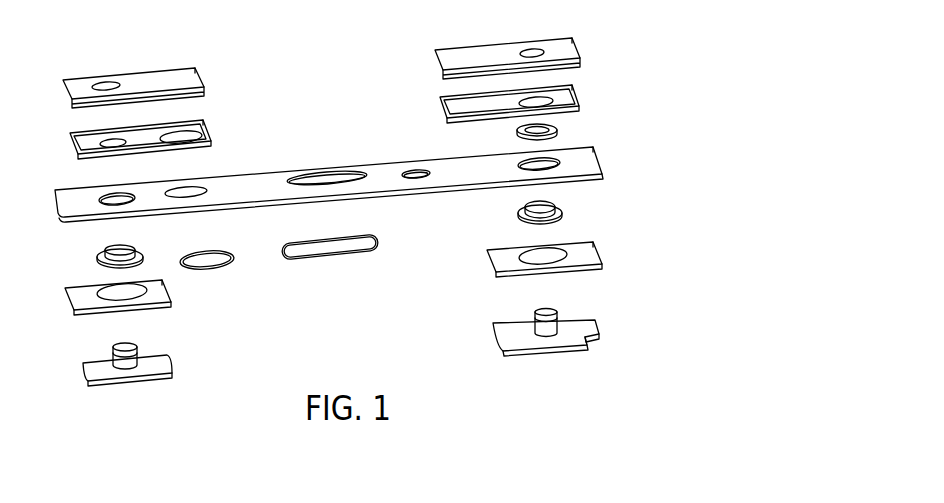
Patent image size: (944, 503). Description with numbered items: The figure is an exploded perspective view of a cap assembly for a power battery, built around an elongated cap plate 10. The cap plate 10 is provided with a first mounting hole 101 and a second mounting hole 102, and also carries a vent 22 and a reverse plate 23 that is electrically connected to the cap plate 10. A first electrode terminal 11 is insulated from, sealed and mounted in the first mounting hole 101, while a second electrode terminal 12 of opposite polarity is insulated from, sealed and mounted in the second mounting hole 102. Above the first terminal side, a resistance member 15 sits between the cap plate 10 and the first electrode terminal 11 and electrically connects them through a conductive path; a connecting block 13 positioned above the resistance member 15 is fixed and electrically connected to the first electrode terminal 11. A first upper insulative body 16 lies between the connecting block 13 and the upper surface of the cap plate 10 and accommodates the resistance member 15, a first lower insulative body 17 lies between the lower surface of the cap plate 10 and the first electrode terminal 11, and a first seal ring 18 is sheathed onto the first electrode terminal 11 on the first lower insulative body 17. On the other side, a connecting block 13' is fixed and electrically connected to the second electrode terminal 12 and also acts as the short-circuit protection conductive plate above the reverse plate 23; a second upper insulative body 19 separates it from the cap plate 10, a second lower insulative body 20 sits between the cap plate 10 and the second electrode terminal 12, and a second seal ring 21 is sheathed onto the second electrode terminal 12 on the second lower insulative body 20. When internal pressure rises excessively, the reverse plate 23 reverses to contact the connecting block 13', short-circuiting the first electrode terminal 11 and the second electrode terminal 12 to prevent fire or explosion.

The cap plate 10 is at (310, 172).
The first mounting hole 101 is at (532, 165).
The second mounting hole 102 is at (114, 200).
The first electrode terminal 11 is at (557, 310).
The second electrode terminal 12 is at (123, 345).
The connecting block 13 is at (522, 41).
The connecting block 13' is at (139, 70).
The resistance member 15 is at (552, 132).
The first upper insulative body 16 is at (568, 95).
The first lower insulative body 17 is at (588, 253).
The first seal ring 18 is at (543, 208).
The second upper insulative body 19 is at (205, 124).
The second lower insulative body 20 is at (82, 292).
The second seal ring 21 is at (124, 252).
The vent 22 is at (367, 247).
The reverse plate 23 is at (210, 260).